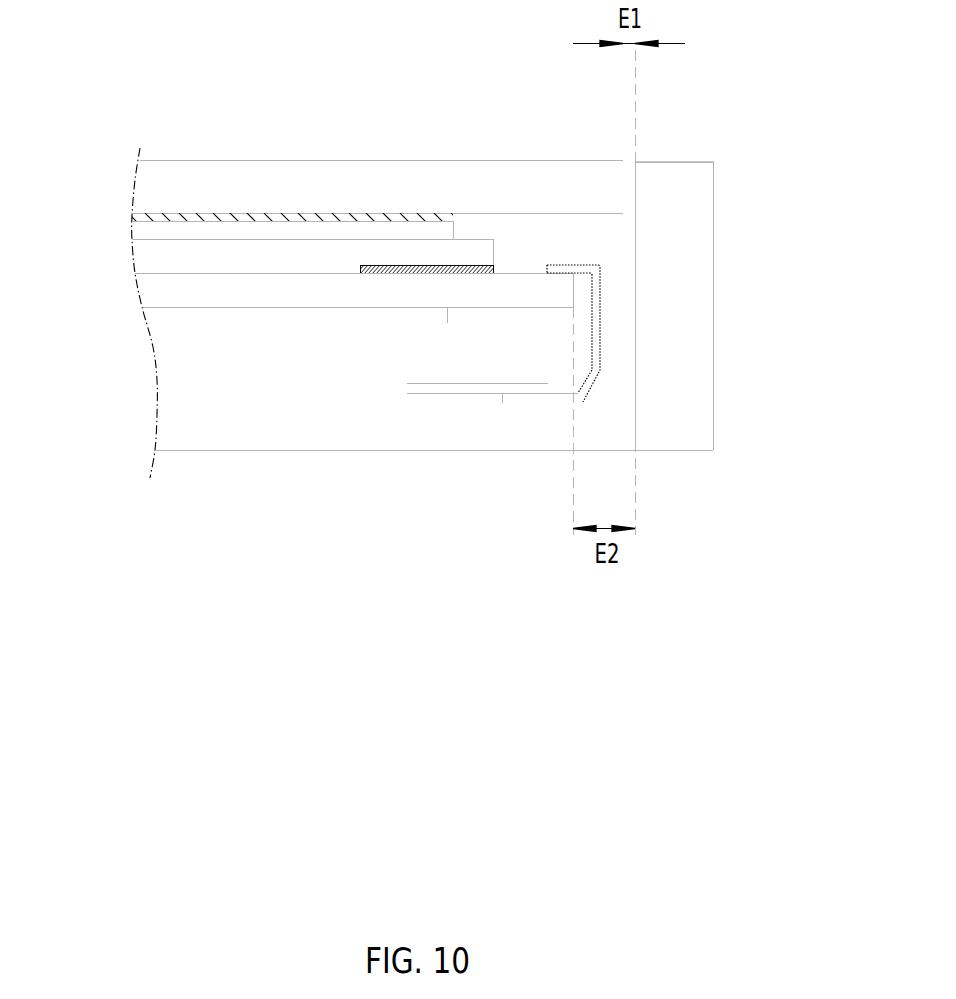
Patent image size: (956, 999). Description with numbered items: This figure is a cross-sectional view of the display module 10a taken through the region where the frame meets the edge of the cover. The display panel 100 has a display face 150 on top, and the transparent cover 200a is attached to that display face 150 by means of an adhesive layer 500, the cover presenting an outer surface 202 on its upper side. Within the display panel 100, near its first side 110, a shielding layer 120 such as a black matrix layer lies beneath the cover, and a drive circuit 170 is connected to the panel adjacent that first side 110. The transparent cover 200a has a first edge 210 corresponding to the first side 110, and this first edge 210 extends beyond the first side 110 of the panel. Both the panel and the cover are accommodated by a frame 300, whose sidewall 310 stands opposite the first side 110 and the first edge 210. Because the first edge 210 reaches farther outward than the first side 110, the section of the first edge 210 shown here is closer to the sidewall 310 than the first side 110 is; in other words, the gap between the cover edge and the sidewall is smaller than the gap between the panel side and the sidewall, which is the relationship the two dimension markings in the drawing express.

The display module 10a is at (142, 76).
The display panel 100 is at (130, 237).
The first side 110 is at (575, 288).
The shielding layer 120 is at (375, 262).
The display face 150 is at (170, 213).
The drive circuit 170 is at (592, 264).
The transparent cover 200a is at (515, 173).
The outer surface 202 is at (193, 160).
The first edge 210 is at (623, 204).
The frame 300 is at (737, 323).
The sidewall 310 is at (685, 180).
The adhesive layer 500 is at (261, 213).